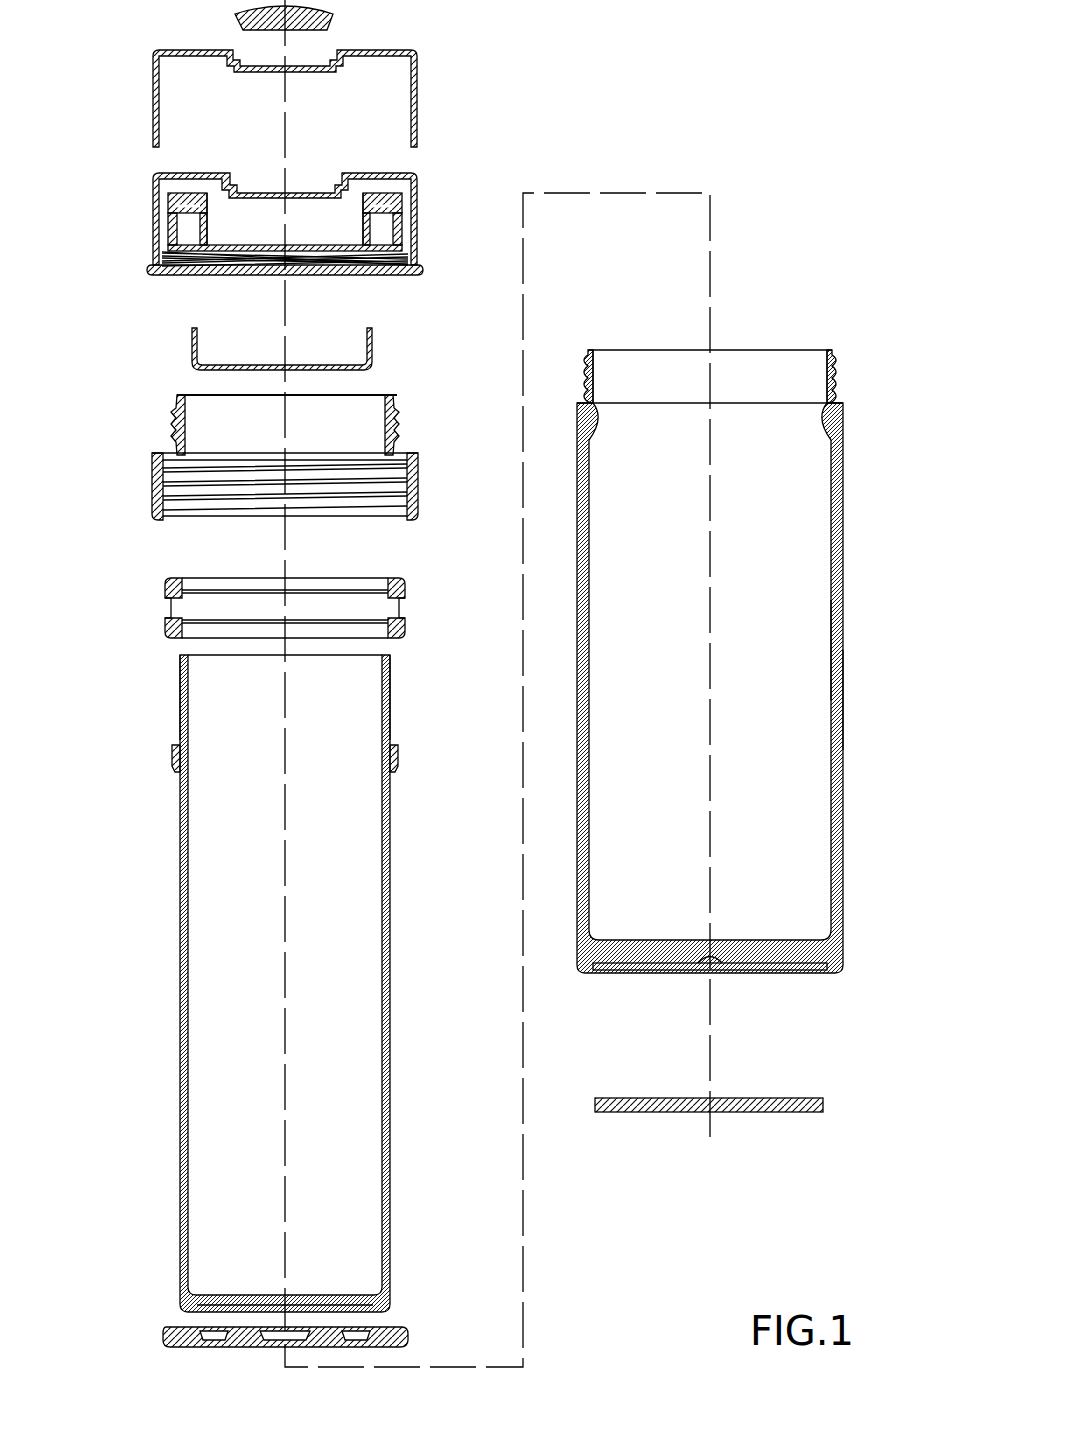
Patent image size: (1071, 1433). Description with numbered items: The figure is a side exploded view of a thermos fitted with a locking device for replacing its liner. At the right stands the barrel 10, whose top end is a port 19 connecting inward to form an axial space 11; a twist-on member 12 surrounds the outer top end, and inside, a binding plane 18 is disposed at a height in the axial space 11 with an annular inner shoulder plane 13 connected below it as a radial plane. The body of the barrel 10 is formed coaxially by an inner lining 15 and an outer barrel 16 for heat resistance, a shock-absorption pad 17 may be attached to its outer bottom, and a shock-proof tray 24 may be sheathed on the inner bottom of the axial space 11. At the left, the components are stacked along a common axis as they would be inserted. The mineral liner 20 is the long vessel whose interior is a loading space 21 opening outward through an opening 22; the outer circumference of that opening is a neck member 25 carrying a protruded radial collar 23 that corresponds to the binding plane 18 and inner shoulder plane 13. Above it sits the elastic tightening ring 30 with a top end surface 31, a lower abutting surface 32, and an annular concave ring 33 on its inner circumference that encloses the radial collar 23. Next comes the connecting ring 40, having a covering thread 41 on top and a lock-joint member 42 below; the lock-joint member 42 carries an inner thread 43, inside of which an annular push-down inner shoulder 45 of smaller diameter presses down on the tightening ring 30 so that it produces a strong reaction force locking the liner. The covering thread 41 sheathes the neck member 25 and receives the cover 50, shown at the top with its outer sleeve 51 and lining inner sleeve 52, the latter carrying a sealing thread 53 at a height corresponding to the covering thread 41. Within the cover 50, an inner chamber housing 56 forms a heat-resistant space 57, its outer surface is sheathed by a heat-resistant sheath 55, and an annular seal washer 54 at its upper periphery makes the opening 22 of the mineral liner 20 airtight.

The barrel 10 is at (850, 567).
The axial space 11 is at (672, 468).
The twist-on member 12 is at (845, 370).
The inner shoulder plane 13 is at (818, 398).
The inner lining 15 is at (830, 660).
The outer barrel 16 is at (842, 705).
The shock-absorption pad 17 is at (770, 1100).
The binding plane 18 is at (600, 365).
The port 19 is at (728, 350).
The mineral liner 20 is at (165, 870).
The loading space 21 is at (342, 950).
The opening 22 is at (222, 658).
The radial collar 23 is at (398, 757).
The shock-proof tray 24 is at (402, 1330).
The neck member 25 is at (392, 695).
The tightening ring 30 is at (160, 605).
The top end surface 31 is at (190, 580).
The lower abutting surface 32 is at (188, 641).
The annular concave ring 33 is at (392, 600).
The connecting ring 40 is at (135, 412).
The covering thread 41 is at (410, 405).
The lock-joint member 42 is at (432, 492).
The inner thread 43 is at (270, 485).
The push-down inner shoulder 45 is at (318, 460).
The cover 50 is at (125, 160).
The outer sleeve 51 is at (418, 97).
The inner sleeve 52 is at (440, 218).
The sealing thread 53 is at (330, 260).
The seal washer 54 is at (172, 212).
The heat-resistant sheath 55 is at (192, 350).
The inner chamber housing 56 is at (268, 255).
The heat-resistant space 57 is at (362, 205).